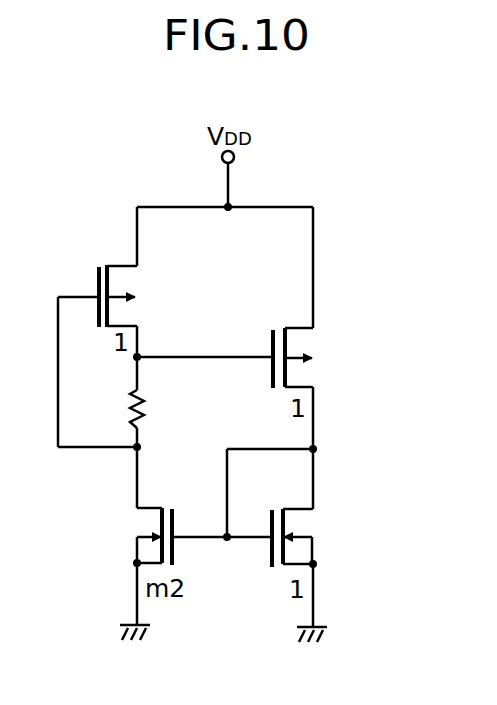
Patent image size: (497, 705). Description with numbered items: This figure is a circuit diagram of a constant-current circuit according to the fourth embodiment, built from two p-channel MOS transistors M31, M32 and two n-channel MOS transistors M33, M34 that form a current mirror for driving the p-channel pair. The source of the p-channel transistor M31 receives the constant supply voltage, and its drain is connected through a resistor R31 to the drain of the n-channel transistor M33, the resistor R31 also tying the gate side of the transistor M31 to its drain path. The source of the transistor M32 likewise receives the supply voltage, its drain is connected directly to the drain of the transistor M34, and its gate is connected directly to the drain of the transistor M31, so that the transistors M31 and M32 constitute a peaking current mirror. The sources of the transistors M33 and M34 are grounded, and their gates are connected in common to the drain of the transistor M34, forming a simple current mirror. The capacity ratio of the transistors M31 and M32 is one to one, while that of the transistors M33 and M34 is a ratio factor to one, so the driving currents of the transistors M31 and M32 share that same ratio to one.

The p-channel MOS transistor M31 is at (144, 296).
The p-channel MOS transistor M32 is at (320, 358).
The n-channel MOS transistor M33 is at (127, 536).
The n-channel MOS transistor M34 is at (319, 538).
The resistor R31 is at (158, 409).